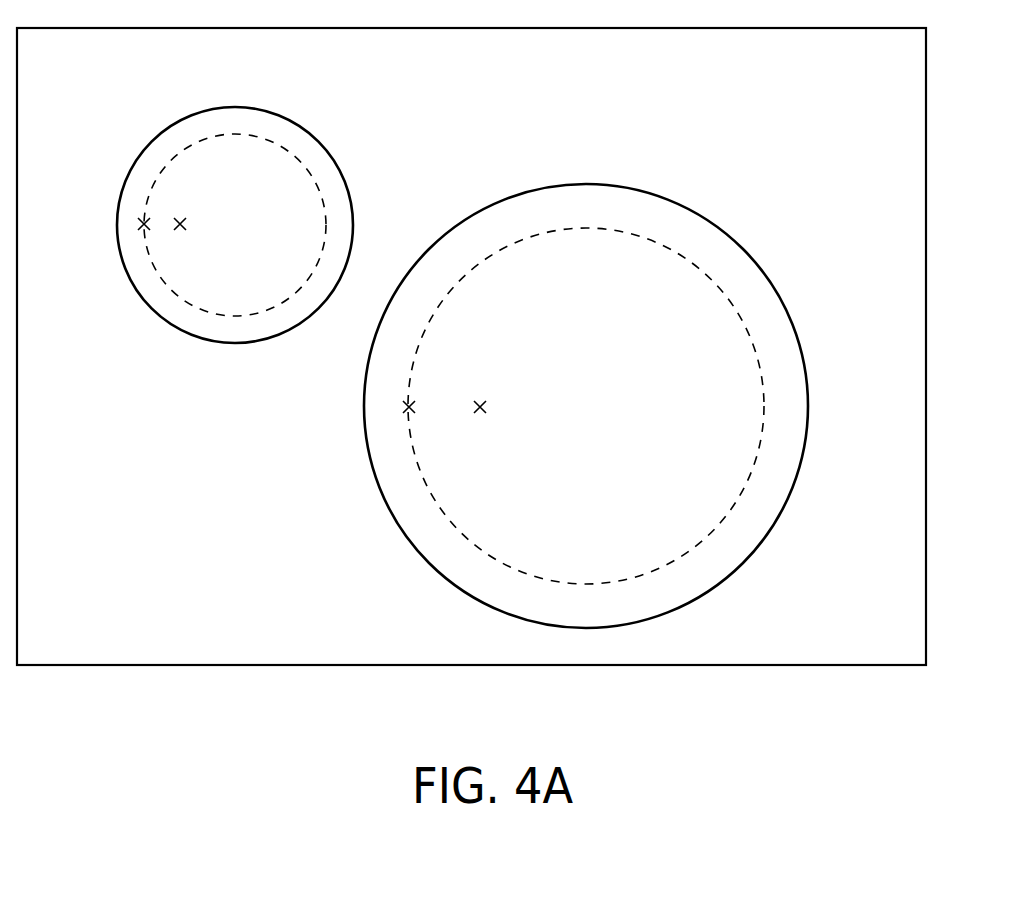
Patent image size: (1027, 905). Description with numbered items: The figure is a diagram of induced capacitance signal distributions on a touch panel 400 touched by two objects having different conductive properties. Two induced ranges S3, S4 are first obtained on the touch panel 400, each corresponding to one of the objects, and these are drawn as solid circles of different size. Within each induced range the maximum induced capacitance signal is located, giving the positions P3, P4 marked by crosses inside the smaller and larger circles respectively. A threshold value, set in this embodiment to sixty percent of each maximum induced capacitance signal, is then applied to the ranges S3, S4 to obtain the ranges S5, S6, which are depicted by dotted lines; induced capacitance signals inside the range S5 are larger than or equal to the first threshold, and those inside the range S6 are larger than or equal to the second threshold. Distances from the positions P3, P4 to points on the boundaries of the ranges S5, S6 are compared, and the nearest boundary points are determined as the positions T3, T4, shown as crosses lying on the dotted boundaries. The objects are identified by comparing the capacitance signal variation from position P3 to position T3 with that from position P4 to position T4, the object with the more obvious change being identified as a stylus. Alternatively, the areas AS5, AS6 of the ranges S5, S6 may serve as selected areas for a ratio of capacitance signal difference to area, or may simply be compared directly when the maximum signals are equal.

The touch panel 400 is at (927, 97).
The induced range S3 is at (158, 314).
The induced range S4 is at (410, 546).
The range S5 is at (286, 148).
The range S6 is at (628, 232).
The area of induced range S5 AS5 is at (232, 290).
The area of induced range S6 AS6 is at (581, 563).
The position T3 is at (138, 224).
The position T4 is at (402, 407).
The position P3 is at (184, 215).
The position P4 is at (481, 397).